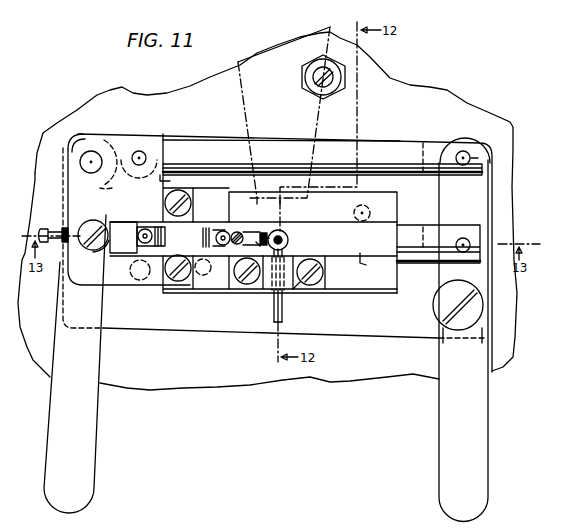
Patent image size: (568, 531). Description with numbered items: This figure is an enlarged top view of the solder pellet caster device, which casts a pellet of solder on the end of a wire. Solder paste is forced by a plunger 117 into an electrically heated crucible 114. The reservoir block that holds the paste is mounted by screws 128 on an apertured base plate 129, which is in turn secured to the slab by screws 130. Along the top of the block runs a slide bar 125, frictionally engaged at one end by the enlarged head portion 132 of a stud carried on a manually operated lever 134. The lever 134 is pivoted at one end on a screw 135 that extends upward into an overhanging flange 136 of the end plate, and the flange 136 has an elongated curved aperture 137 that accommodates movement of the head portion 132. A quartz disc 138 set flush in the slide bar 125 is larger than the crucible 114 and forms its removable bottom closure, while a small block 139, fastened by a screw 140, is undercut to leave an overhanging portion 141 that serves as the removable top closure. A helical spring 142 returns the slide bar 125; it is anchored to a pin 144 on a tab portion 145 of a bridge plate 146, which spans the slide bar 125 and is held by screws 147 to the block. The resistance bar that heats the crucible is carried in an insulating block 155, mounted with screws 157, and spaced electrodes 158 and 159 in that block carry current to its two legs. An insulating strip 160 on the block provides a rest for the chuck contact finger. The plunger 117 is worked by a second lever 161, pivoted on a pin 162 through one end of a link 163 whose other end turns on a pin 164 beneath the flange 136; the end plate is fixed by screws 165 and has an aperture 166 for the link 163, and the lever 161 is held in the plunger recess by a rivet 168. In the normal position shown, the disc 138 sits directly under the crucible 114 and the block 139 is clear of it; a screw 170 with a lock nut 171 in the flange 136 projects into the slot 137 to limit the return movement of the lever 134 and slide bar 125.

The crucible 114 is at (289, 240).
The plunger 117 is at (413, 236).
The slide bar 125 is at (377, 265).
The screws 128 is at (372, 209).
The base plate 129 is at (420, 333).
The screws 130 is at (118, 158).
The head portion 132 is at (129, 212).
The lever 134 is at (94, 417).
The screw 135 is at (90, 151).
The overhanging flange 136 is at (140, 131).
The elongated curved aperture 137 is at (109, 226).
The disc 138 is at (287, 246).
The block 139 is at (257, 243).
The screw 140 is at (226, 248).
The overhanging portion 141 is at (262, 232).
The helical spring 142 is at (170, 327).
The pin 144 is at (128, 252).
The tab portion 145 is at (152, 248).
The bridge plate 146 is at (186, 283).
The screws 147 is at (187, 212).
The insulating block 155 is at (298, 287).
The screws 157 is at (246, 282).
The electrode 158 is at (285, 320).
The electrode 159 is at (273, 320).
The insulating strip 160 is at (358, 209).
The lever 161 is at (440, 432).
The pin 162 is at (461, 151).
The link 163 is at (372, 147).
The pin 164 is at (142, 150).
The screws 165 is at (117, 188).
The aperture 166 is at (170, 178).
The rivet 168 is at (463, 238).
The screw 170 is at (50, 223).
The lock nut 171 is at (97, 245).